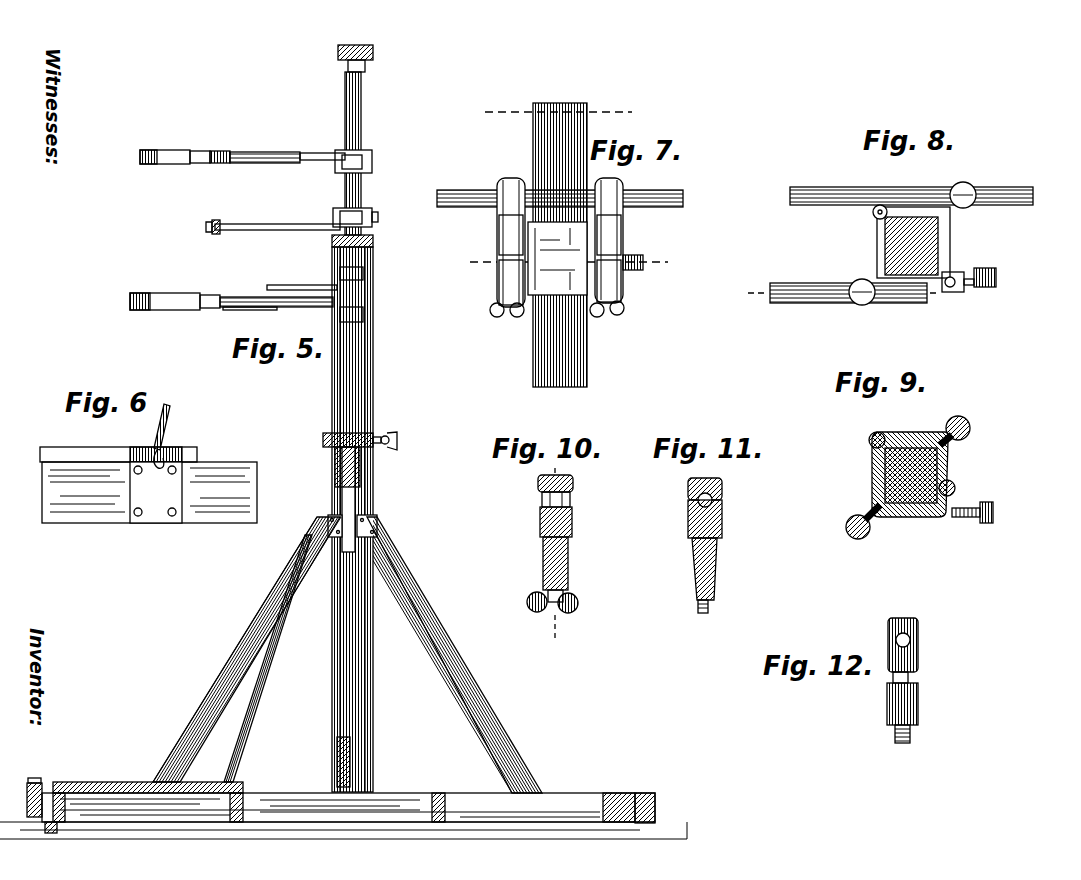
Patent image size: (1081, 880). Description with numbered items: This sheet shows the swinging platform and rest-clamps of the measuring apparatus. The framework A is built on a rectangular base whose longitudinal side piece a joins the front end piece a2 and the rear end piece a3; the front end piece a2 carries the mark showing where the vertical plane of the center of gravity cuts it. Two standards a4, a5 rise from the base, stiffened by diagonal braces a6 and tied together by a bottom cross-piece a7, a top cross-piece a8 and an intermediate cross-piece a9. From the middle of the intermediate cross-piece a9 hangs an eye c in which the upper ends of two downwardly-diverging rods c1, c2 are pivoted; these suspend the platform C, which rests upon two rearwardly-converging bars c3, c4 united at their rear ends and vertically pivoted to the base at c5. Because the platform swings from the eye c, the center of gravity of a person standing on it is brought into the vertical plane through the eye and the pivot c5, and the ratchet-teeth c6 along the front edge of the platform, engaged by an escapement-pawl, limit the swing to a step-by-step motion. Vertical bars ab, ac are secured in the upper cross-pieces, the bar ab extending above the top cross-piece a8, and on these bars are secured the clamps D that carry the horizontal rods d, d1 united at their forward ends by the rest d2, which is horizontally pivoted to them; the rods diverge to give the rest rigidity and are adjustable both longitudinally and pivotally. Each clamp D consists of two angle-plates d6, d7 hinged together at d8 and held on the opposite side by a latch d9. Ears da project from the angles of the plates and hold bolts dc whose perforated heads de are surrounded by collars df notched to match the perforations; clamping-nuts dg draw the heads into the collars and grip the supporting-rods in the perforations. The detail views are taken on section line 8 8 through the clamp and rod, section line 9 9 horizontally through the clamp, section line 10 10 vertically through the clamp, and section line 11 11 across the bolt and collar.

In FIG. 5, the framework A is at (412, 616).
In FIG. 5, the longitudinal side piece a is at (40, 790).
In FIG. 5, the front end piece a2 is at (35, 783).
In FIG. 5, the end piece a3 is at (657, 812).
In FIG. 5, the standard a4 is at (366, 678).
In FIG. 5, the standard a5 is at (373, 52).
In FIG. 5, the diagonal brace a6 is at (464, 706).
In FIG. 5, the bottom cross-piece a7 is at (350, 760).
In FIG. 5, the top cross-piece a8 is at (373, 241).
In FIG. 5, the intermediate cross-piece a9 is at (323, 440).
In FIG. 5, the vertical bar ab is at (361, 128).
In FIG. 5, the vertical bar ac is at (350, 372).
In FIG. 5, the platform C is at (118, 782).
In FIG. 6, the platform C is at (68, 447).
In FIG. 5, the eye c is at (335, 455).
In FIG. 5, the downwardly-diverging rod c1 is at (262, 706).
In FIG. 6, the downwardly-diverging rod c2 is at (171, 420).
In FIG. 5, the rearwardly-converging bar c3 is at (447, 803).
In FIG. 6, the rearwardly-converging bar c4 is at (135, 492).
In FIG. 5, the vertical pivot c5 is at (638, 793).
In FIG. 5, the ratchet-teeth c6 is at (60, 828).
In FIG. 5, the clamp D is at (388, 300).
In FIG. 7, the clamp D is at (557, 258).
In FIG. 8, the clamp D is at (948, 230).
In FIG. 9, the clamp D is at (940, 462).
In FIG. 5, the horizontal rod d is at (244, 297).
In FIG. 7, the horizontal rod d is at (452, 190).
In FIG. 8, the horizontal rod d is at (782, 303).
In FIG. 5, the horizontal rod d1 is at (238, 310).
In FIG. 5, the rest d2 is at (178, 283).
In FIG. 7, the angle-plate d6 is at (545, 290).
In FIG. 8, the angle-plate d6 is at (877, 255).
In FIG. 9, the angle-plate d6 is at (878, 490).
In FIG. 11, the angle-plate d6 is at (698, 608).
In FIG. 7, the angle-plate d7 is at (600, 312).
In FIG. 8, the angle-plate d7 is at (950, 240).
In FIG. 9, the angle-plate d7 is at (948, 470).
In FIG. 8, the hinge d8 is at (882, 205).
In FIG. 9, the hinge d8 is at (870, 440).
In FIG. 7, the latch d9 is at (628, 272).
In FIG. 8, the latch d9 is at (962, 292).
In FIG. 9, the latch d9 is at (962, 518).
In FIG. 7, the ear da is at (623, 275).
In FIG. 9, the ear da is at (858, 540).
In FIG. 10, the ear da is at (568, 562).
In FIG. 11, the ear da is at (717, 562).
In FIG. 7, the bolt dc is at (505, 305).
In FIG. 9, the bolt dc is at (850, 535).
In FIG. 10, the bolt dc is at (550, 605).
In FIG. 12, the bolt dc is at (908, 680).
In FIG. 7, the perforated head de is at (623, 185).
In FIG. 8, the perforated head de is at (866, 305).
In FIG. 10, the perforated head de is at (573, 485).
In FIG. 11, the perforated head de is at (722, 490).
In FIG. 12, the perforated head de is at (918, 628).
In FIG. 7, the collar df is at (625, 225).
In FIG. 10, the collar df is at (572, 521).
In FIG. 11, the collar df is at (722, 525).
In FIG. 12, the collar df is at (918, 710).
In FIG. 7, the clamping-nut dg is at (618, 315).
In FIG. 10, the clamping-nut dg is at (578, 605).
In FIG. 11, the clamping-nut dg is at (716, 590).
In FIG. 7, the section line 8 8 is at (567, 112).
In FIG. 7, the section line 9 9 is at (570, 263).
In FIG. 8, the section line 10 10 is at (842, 295).
In FIG. 10, the section line 11 11 is at (555, 557).